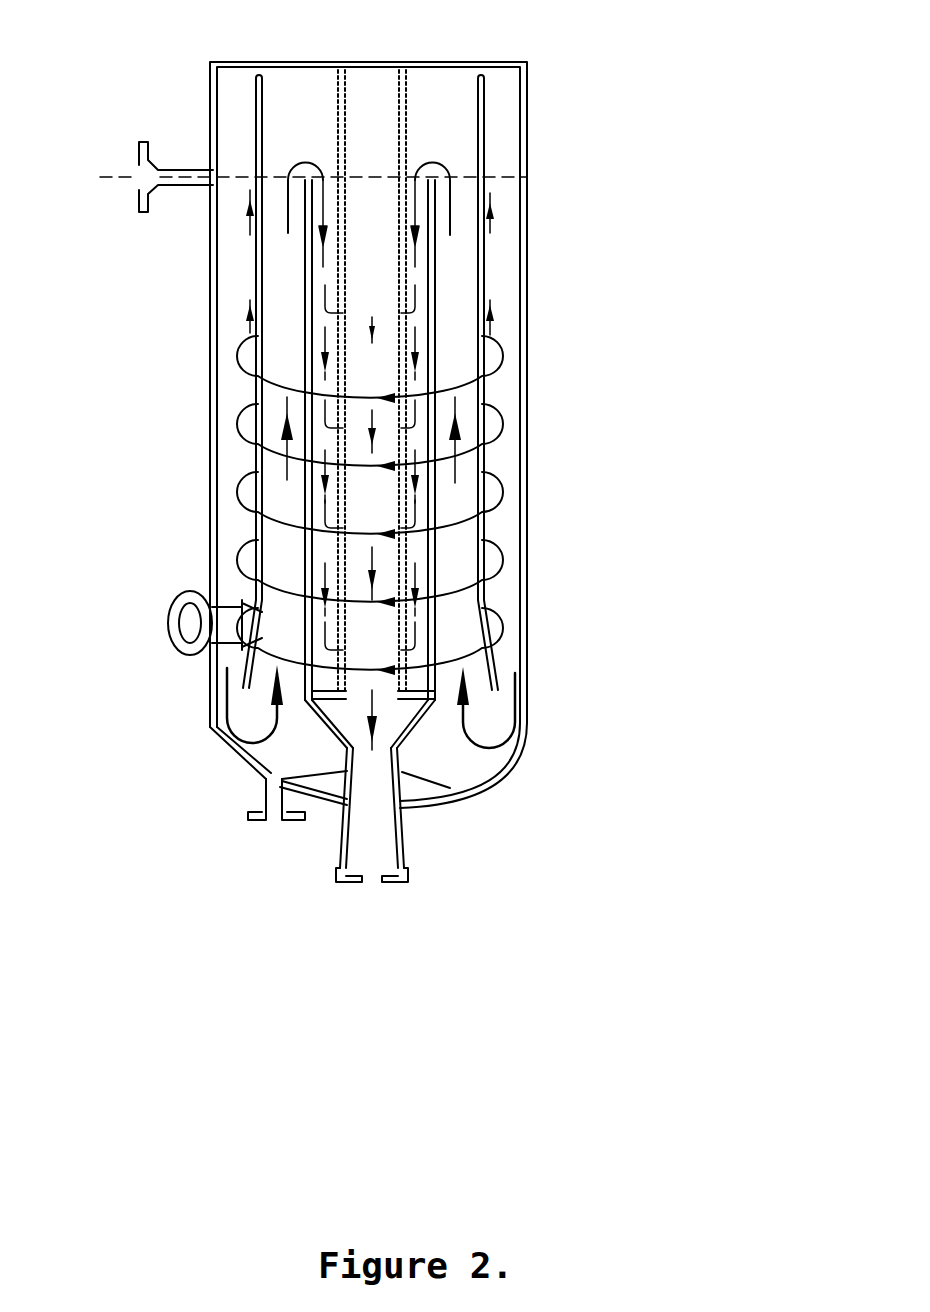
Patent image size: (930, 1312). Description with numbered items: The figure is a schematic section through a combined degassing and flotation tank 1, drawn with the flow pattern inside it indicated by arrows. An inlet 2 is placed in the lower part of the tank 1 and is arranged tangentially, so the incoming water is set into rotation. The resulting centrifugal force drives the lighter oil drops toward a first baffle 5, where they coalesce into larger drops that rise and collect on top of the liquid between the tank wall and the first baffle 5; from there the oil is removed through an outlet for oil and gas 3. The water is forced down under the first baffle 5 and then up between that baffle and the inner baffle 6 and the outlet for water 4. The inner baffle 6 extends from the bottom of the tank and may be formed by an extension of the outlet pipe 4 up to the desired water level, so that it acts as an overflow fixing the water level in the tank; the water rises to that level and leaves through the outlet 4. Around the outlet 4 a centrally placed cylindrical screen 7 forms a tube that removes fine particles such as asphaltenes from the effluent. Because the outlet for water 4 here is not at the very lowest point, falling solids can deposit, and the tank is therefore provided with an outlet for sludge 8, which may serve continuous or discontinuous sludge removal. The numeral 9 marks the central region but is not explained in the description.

The tank 1 is at (527, 420).
The inlet 2 is at (162, 623).
The outlet for oil and gas 3 is at (295, 155).
The outlet for water 4 is at (373, 884).
The first baffle 5 is at (482, 157).
The inner baffle 6 is at (437, 312).
The central cylindrical screen 7 is at (403, 120).
The outlet for sludge 8 is at (275, 826).
The central channel 9 is at (366, 419).